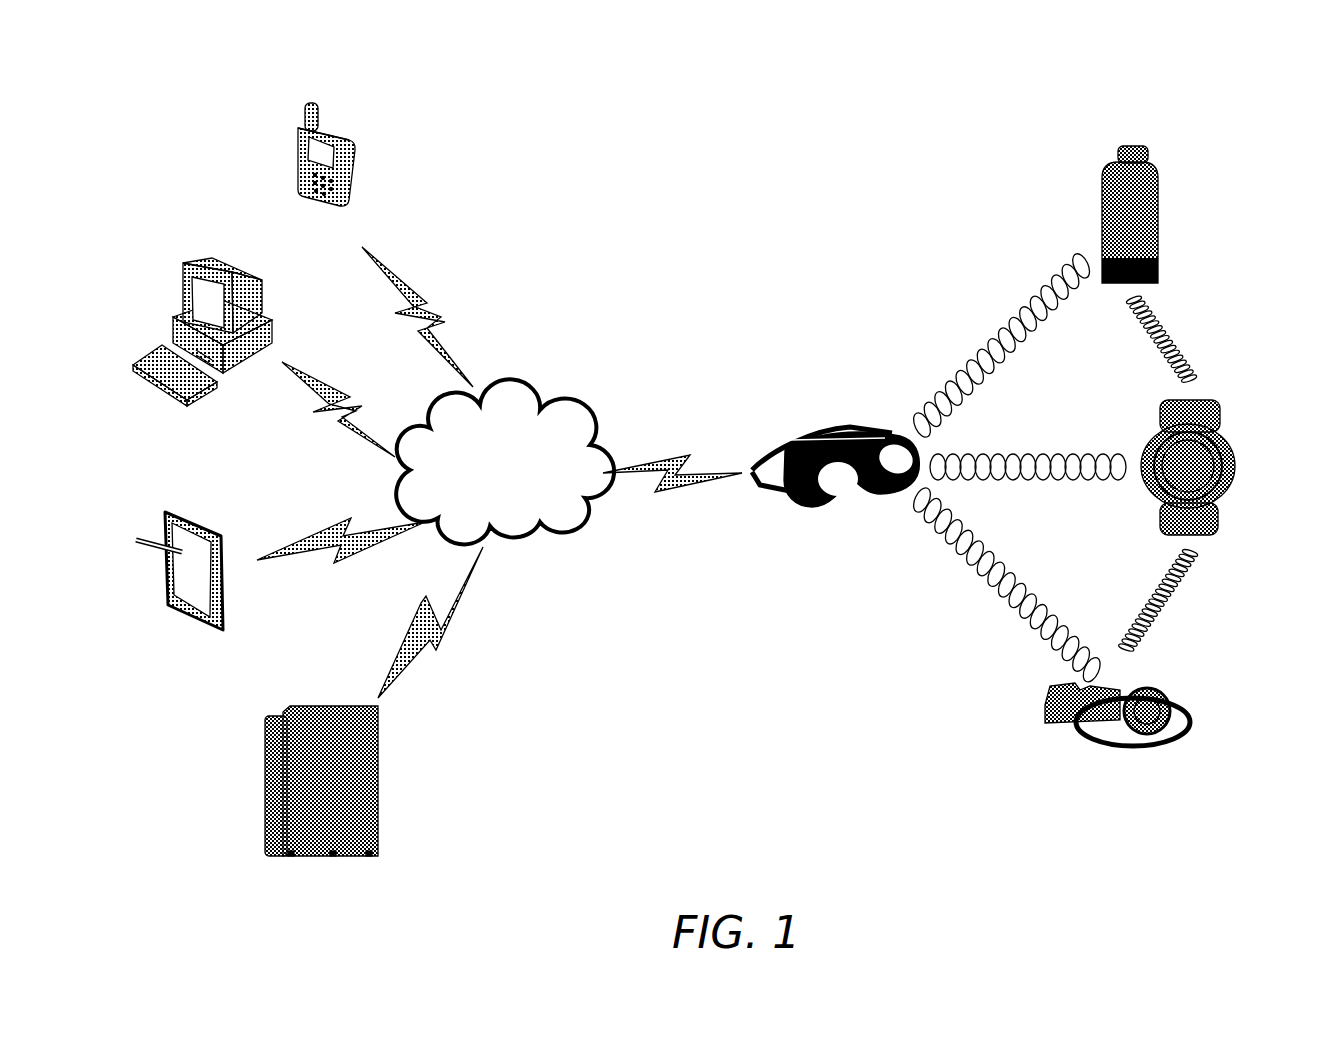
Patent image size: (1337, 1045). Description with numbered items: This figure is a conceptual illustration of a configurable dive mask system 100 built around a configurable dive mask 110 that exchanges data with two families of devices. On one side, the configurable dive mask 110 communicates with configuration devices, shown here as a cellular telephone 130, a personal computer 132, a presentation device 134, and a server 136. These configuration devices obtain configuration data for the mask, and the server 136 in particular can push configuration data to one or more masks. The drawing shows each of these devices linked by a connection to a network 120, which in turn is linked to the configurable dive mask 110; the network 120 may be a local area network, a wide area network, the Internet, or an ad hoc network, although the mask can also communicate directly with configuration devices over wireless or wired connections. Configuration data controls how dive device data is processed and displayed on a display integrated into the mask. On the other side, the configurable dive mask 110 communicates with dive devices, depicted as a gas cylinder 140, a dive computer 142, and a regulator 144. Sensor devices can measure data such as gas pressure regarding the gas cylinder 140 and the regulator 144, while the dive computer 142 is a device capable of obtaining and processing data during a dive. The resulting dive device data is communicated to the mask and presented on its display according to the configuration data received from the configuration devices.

The configurable dive mask system 100 is at (740, 194).
The configurable dive mask 110 is at (856, 420).
The network 120 is at (535, 405).
The cellular telephone 130 is at (313, 102).
The personal computer 132 is at (186, 262).
The presentation device 134 is at (225, 532).
The server 136 is at (320, 706).
The gas cylinder 140 is at (1145, 146).
The dive computer 142 is at (1223, 395).
The regulator 144 is at (1170, 695).